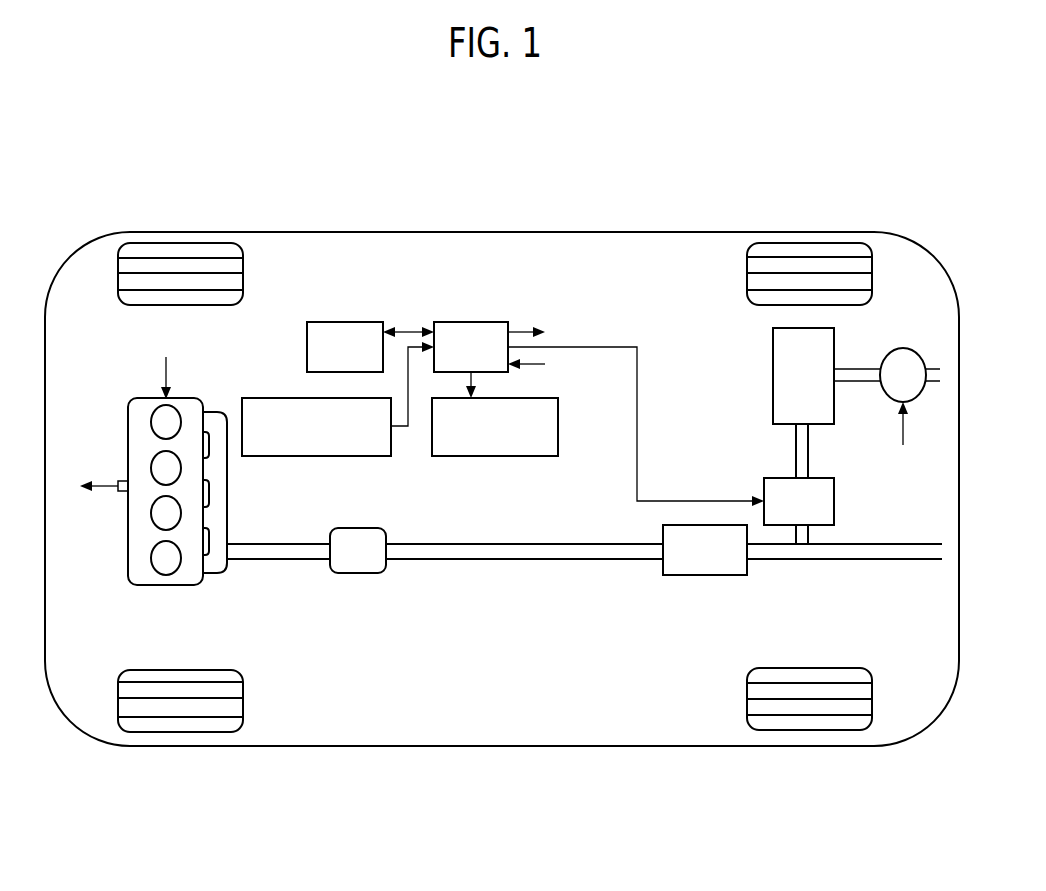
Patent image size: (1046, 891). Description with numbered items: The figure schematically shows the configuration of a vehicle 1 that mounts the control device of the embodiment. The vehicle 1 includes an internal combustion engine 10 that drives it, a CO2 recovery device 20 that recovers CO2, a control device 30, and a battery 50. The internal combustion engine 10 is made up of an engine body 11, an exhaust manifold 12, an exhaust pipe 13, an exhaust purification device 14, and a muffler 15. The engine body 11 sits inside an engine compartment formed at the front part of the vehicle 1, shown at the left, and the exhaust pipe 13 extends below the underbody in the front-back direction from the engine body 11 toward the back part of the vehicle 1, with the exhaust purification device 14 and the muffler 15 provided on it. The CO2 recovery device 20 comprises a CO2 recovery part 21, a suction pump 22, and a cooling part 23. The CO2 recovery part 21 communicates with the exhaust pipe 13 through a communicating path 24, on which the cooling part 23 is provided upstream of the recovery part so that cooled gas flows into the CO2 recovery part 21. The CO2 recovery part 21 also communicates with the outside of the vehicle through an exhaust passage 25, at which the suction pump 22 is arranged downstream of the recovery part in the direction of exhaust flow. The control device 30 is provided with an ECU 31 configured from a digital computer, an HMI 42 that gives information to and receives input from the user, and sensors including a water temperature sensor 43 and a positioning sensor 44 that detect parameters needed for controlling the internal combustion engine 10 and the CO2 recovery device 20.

The vehicle 1 is at (502, 445).
The internal combustion engine 10 is at (498, 507).
The engine body 11 is at (163, 504).
The exhaust manifold 12 is at (213, 529).
The exhaust pipe 13 is at (584, 519).
The exhaust purification device 14 is at (358, 518).
The muffler 15 is at (705, 586).
The CO2 recovery device 20 is at (807, 411).
The CO2 recovery part 21 is at (771, 359).
The suction pump 22 is at (880, 361).
The cooling part 23 is at (833, 494).
The communicating path 24 is at (759, 471).
The exhaust passage 25 is at (939, 340).
The control device 30 is at (503, 383).
The ECU 31 is at (573, 395).
The HMI 42 is at (345, 315).
The water temperature sensor 43 is at (91, 471).
The positioning sensor 44 is at (316, 396).
The battery 50 is at (495, 460).